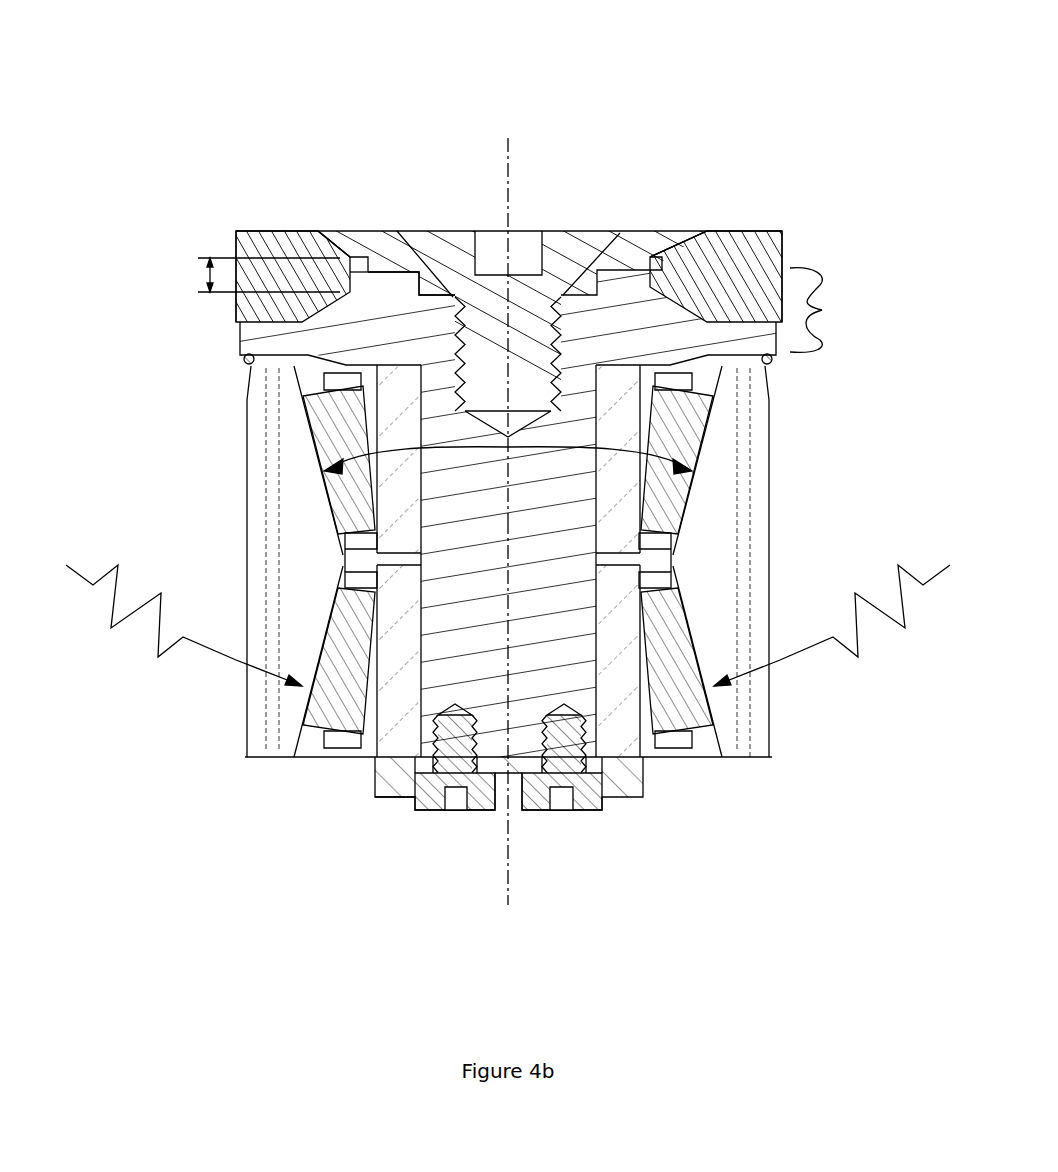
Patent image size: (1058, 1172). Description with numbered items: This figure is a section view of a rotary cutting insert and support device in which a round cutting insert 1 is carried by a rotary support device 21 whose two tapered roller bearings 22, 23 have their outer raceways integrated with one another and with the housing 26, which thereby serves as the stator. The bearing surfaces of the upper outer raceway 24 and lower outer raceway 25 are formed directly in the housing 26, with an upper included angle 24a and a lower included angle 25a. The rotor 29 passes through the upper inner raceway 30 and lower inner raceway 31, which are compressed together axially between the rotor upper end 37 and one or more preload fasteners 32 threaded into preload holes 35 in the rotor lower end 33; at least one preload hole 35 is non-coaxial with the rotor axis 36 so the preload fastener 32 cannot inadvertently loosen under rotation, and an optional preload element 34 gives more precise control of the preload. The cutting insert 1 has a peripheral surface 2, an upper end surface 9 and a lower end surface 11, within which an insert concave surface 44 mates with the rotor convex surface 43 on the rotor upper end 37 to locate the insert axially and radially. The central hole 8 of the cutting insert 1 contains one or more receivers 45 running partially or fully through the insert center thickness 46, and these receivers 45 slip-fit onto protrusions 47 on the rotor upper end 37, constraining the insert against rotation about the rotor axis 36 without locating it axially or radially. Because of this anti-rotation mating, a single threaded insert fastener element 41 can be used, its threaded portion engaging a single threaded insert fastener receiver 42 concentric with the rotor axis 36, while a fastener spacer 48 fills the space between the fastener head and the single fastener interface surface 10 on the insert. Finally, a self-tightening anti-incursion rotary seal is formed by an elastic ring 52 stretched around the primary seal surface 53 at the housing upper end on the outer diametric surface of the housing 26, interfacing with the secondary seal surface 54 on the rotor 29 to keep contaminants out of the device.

The cutting insert 1 is at (760, 256).
The peripheral surface 2 is at (232, 249).
The central hole 8 is at (565, 292).
The upper end surface 9 is at (260, 228).
The fastener interface surface 10 is at (650, 372).
The lower end surface 11 is at (308, 258).
The rotary support device 21 is at (207, 327).
The bearing 22 is at (684, 516).
The bearing 23 is at (712, 713).
The upper outer raceway 24 is at (722, 430).
The upper included angle 24a is at (625, 375).
The lower outer raceway 25 is at (720, 705).
The lower included angle 25a is at (780, 660).
The housing 26 is at (752, 568).
The rotor 29 is at (472, 480).
The upper inner raceway 30 is at (632, 392).
The lower inner raceway 31 is at (723, 757).
The preload fastener 32 is at (430, 812).
The rotor lower end 33 is at (512, 778).
The preload element 34 is at (376, 796).
The preload hole 35 is at (420, 748).
The rotor axis 36 is at (520, 885).
The rotor upper end 37 is at (823, 310).
The threaded insert fastener element 41 is at (608, 262).
The threaded insert fastener receiver 42 is at (576, 255).
The rotor convex surface 43 is at (331, 245).
The insert concave surface 44 is at (372, 283).
The receiver 45 is at (354, 258).
The insert center thickness 46 is at (200, 278).
The protrusion 47 is at (364, 262).
The fastener spacer 48 is at (636, 380).
The elastic ring 52 is at (243, 359).
The primary seal surface 53 is at (775, 376).
The secondary seal surface 54 is at (772, 362).